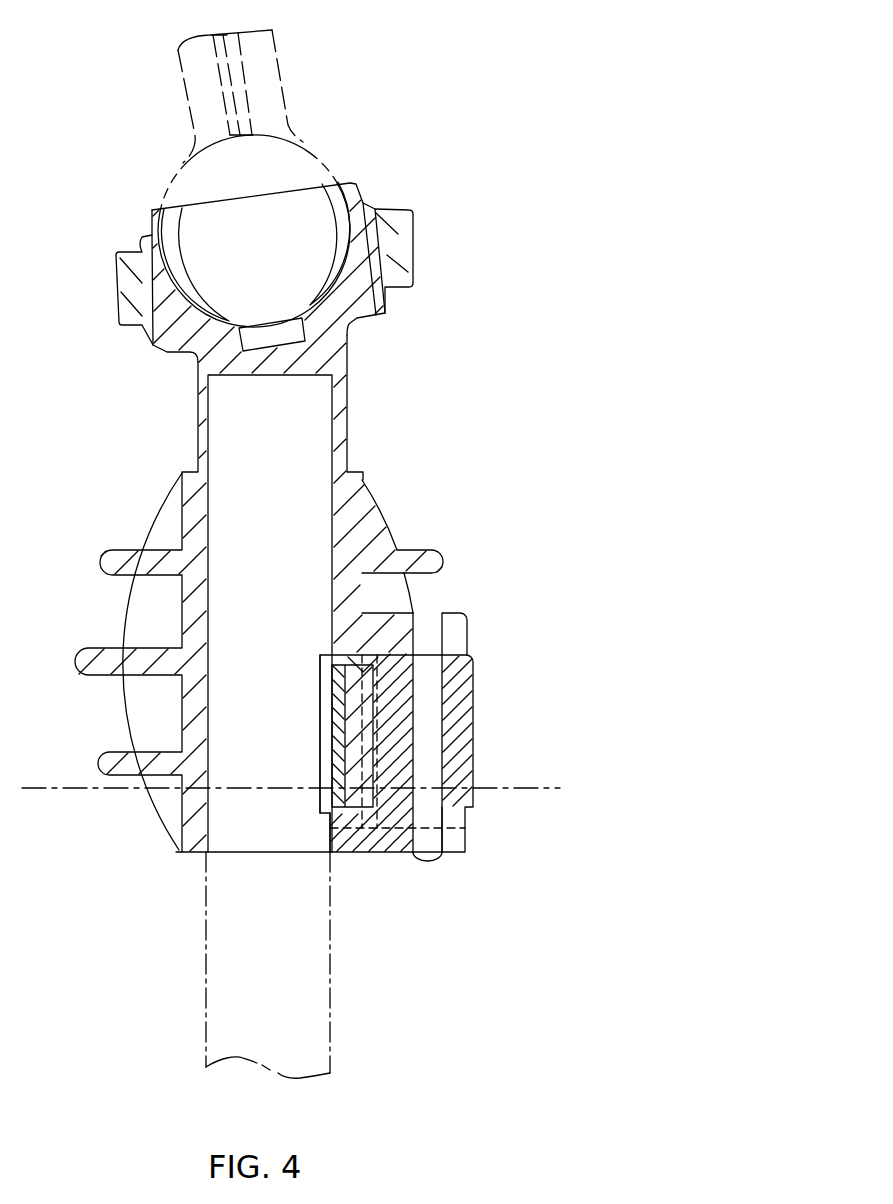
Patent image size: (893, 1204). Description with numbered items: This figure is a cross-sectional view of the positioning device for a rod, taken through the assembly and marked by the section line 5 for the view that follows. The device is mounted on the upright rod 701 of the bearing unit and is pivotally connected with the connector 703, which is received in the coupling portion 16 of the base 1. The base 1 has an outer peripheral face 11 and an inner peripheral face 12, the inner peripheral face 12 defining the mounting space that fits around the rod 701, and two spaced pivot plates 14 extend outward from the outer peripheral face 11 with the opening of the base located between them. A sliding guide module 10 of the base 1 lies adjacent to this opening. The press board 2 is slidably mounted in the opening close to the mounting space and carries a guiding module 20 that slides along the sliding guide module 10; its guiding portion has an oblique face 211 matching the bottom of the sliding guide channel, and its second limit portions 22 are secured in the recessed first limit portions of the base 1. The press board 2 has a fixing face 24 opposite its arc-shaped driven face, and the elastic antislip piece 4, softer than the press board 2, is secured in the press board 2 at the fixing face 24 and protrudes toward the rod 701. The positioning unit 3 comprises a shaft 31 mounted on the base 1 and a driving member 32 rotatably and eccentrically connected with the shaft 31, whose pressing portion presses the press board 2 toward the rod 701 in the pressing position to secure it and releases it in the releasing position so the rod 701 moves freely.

The connector 703 is at (285, 165).
The rod 701 is at (223, 948).
The coupling portion 16 is at (337, 348).
The base 1 is at (378, 450).
The outer peripheral face 11 is at (388, 510).
The inner peripheral face 12 is at (365, 481).
The positioning unit 3 is at (497, 803).
The pivot plates 14 is at (458, 617).
The driving member 32 is at (463, 692).
The shaft 31 is at (420, 855).
The press board 2 is at (358, 652).
The second limit portions 22 is at (385, 852).
The sliding guide module 10 is at (382, 642).
The guiding module 20 is at (363, 664).
The oblique face 211 is at (348, 835).
The fixing face 24 is at (322, 808).
The antislip piece 4 is at (332, 753).
The section line 5- 5 is at (544, 778).